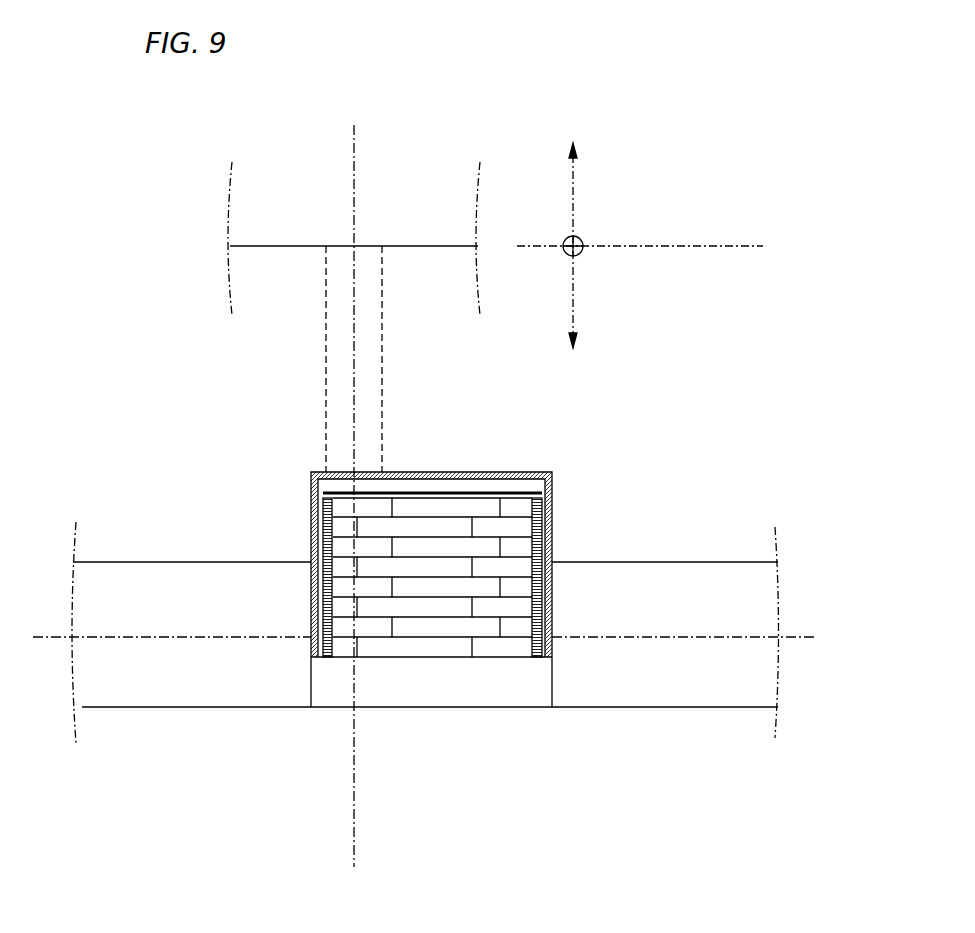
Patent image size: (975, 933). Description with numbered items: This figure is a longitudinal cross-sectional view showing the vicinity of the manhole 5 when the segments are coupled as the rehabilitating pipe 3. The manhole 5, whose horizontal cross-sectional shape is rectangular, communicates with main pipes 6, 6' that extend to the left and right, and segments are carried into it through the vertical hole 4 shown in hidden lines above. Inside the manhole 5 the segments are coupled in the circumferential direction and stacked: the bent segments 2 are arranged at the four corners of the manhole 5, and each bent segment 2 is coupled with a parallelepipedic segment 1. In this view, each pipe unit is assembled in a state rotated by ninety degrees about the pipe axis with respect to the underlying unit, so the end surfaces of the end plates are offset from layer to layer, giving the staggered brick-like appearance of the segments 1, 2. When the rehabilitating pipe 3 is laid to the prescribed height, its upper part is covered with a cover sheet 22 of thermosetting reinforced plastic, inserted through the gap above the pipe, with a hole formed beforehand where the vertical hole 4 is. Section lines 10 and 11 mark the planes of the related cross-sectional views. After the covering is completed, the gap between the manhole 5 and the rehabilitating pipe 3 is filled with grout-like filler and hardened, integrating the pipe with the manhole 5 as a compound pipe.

The parallelepipedic segment 1 is at (484, 500).
The bent segment 2 is at (379, 503).
The cover sheet 22 is at (421, 492).
The rehabilitating pipe 3 is at (418, 663).
The vertical hole 4 is at (320, 412).
The manhole 5 is at (515, 471).
The main pipe 6 is at (191, 605).
The main pipe 6' is at (665, 602).
The section line 10- 10 is at (357, 180).
The section line 11- 11 is at (48, 624).